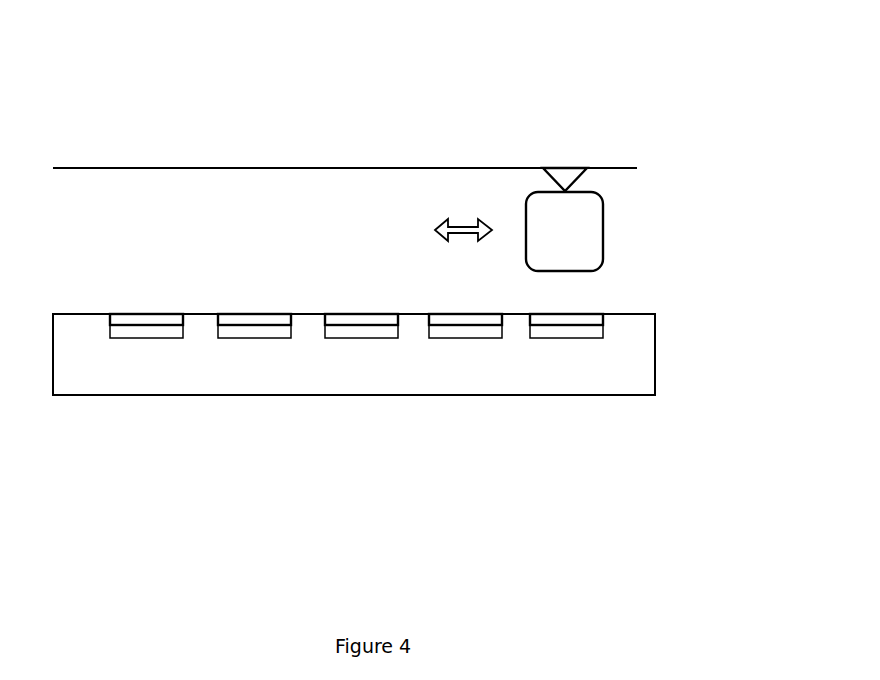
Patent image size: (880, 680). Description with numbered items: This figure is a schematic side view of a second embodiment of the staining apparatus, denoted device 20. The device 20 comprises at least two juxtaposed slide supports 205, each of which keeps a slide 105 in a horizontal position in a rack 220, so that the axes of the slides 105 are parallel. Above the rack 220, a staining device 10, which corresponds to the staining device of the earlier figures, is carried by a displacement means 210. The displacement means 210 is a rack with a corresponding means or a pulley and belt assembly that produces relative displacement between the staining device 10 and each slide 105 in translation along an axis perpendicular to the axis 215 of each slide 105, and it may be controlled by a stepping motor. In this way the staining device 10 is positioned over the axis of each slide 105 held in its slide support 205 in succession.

The staining device embodiment 20 is at (148, 88).
The axis of slide 215 is at (400, 168).
The displacement means 210 is at (568, 177).
The staining device 10 is at (573, 247).
The slide 105 is at (583, 320).
The slide support 205 is at (147, 332).
The rack 220 is at (637, 370).